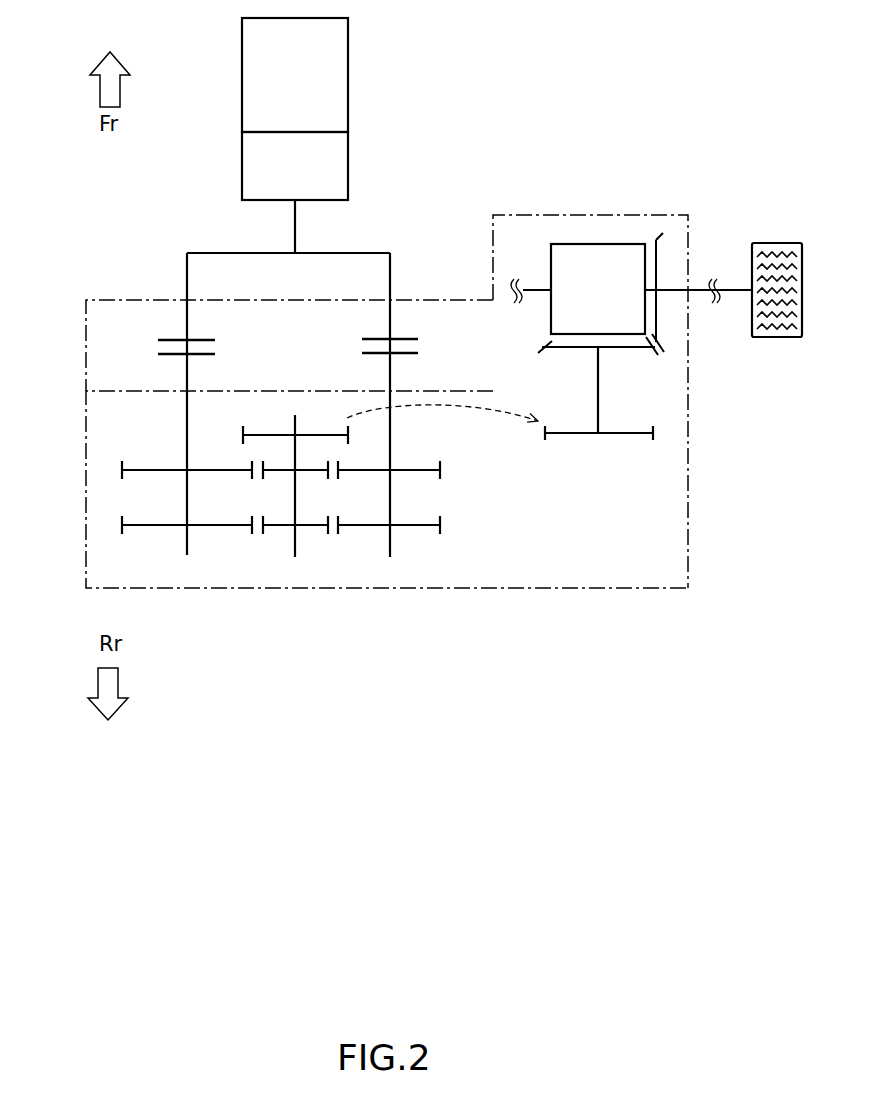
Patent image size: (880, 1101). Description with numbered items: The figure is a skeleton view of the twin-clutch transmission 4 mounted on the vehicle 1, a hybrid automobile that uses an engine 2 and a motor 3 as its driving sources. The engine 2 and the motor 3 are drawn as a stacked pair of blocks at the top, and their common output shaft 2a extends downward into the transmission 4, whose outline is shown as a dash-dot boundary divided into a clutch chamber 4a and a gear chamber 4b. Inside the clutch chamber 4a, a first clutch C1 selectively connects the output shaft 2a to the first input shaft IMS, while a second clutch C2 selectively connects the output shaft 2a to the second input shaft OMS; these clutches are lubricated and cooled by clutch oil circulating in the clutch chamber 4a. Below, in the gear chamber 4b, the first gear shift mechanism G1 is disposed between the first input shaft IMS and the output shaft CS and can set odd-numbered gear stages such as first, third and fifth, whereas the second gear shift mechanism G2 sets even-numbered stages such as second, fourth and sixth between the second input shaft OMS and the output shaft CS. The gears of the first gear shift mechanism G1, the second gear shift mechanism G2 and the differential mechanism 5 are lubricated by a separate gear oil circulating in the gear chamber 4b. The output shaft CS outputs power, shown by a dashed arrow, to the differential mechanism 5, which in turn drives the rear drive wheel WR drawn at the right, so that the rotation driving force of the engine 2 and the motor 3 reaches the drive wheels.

The vehicle 1 is at (508, 123).
The engine 2 is at (350, 72).
The motor 3 is at (350, 167).
The output shaft 2a is at (292, 230).
The transmission 4 is at (127, 272).
The clutch chamber 4a is at (86, 350).
The gear chamber 4b is at (86, 440).
The differential mechanism 5 is at (597, 243).
The first clutch C1 is at (158, 347).
The second clutch C2 is at (420, 347).
The first input shaft IMS is at (186, 442).
The second input shaft OMS is at (392, 450).
The output shaft CS is at (297, 506).
The first gear shift mechanism G1 is at (108, 505).
The second gear shift mechanism G2 is at (452, 498).
The right drive wheel WR is at (778, 243).